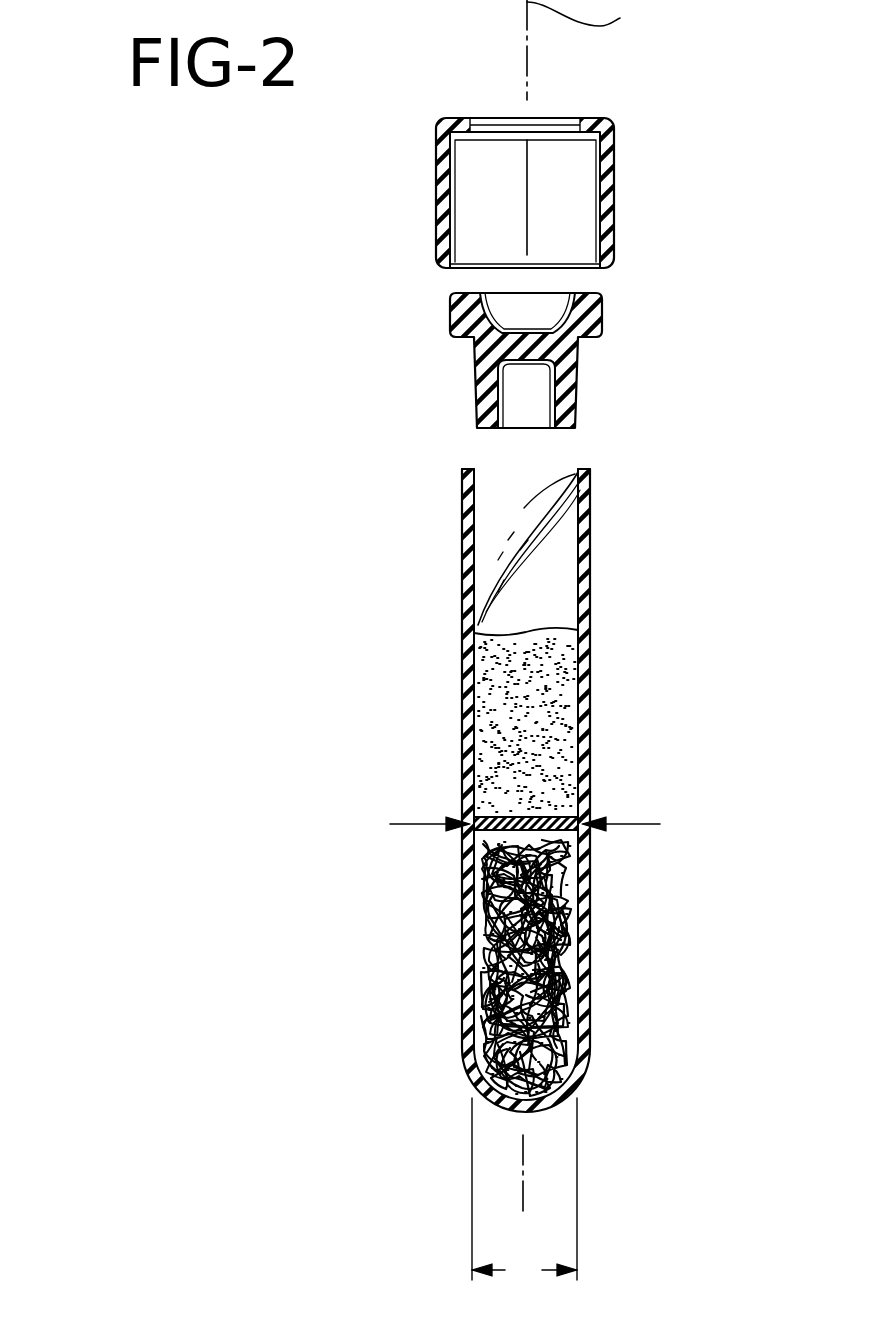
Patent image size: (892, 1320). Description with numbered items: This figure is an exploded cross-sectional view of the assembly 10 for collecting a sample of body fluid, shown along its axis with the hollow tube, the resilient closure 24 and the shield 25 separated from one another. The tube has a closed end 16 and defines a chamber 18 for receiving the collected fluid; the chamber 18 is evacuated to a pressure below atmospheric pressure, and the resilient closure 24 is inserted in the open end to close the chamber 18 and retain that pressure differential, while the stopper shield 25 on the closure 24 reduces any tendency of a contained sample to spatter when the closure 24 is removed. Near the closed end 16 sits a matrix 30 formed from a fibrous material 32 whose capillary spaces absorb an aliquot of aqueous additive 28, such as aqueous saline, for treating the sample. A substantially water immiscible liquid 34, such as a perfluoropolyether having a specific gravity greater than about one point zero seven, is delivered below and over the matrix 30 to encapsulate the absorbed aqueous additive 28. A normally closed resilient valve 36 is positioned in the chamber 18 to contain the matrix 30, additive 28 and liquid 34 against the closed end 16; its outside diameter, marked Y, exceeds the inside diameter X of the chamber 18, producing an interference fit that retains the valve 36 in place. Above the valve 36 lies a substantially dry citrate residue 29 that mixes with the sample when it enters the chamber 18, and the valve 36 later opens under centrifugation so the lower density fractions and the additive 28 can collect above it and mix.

The assembly 10 is at (195, 253).
The closed end 16 is at (538, 1110).
The chamber 18 is at (545, 516).
The resilient closure 24 is at (590, 313).
The shield 25 is at (607, 166).
The aqueous additive 28 is at (578, 849).
The dry residue 29 is at (512, 700).
The matrix 30 is at (578, 946).
The fibrous material 32 is at (480, 947).
The water immiscible liquid 34 is at (485, 845).
The resilient valve 36 is at (572, 818).